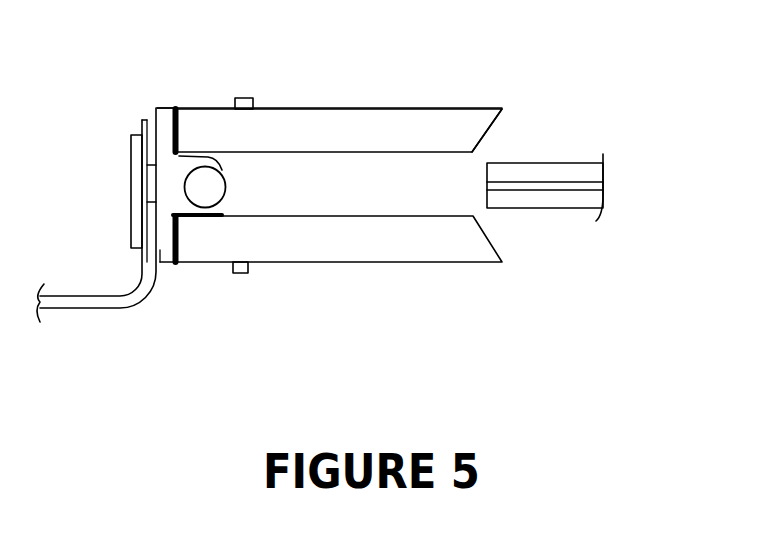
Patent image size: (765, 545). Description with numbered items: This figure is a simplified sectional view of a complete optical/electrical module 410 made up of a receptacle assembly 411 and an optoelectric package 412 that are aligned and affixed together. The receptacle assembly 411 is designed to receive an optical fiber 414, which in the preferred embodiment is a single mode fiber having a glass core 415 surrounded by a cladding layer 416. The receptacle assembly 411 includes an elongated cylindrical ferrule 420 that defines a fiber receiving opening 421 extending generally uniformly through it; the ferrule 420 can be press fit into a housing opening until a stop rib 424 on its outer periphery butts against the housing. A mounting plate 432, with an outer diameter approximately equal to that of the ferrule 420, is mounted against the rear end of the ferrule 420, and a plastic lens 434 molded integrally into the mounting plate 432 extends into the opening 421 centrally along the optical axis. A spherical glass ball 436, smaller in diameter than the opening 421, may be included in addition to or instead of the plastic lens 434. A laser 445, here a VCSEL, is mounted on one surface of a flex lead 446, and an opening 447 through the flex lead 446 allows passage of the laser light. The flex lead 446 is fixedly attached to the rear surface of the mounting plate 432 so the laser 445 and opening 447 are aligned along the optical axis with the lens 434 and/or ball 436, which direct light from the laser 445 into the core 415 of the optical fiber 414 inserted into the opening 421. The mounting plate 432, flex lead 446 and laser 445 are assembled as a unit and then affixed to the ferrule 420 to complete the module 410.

The optical/electrical module 410 is at (563, 334).
The receptacle assembly 411 is at (150, 100).
The optoelectric package 412 is at (416, 88).
The optical fiber 414 is at (575, 229).
The glass core 415 is at (508, 187).
The cladding layer 416 is at (525, 198).
The ferrule 420 is at (315, 120).
The fiber receiving opening 421 is at (463, 170).
The stop rib 424 is at (248, 100).
The mounting plate 432 is at (168, 263).
The plastic lens 434 is at (200, 212).
The ball 436 is at (210, 182).
The laser 445 is at (138, 232).
The flex lead 446 is at (120, 302).
The opening 447 is at (148, 190).